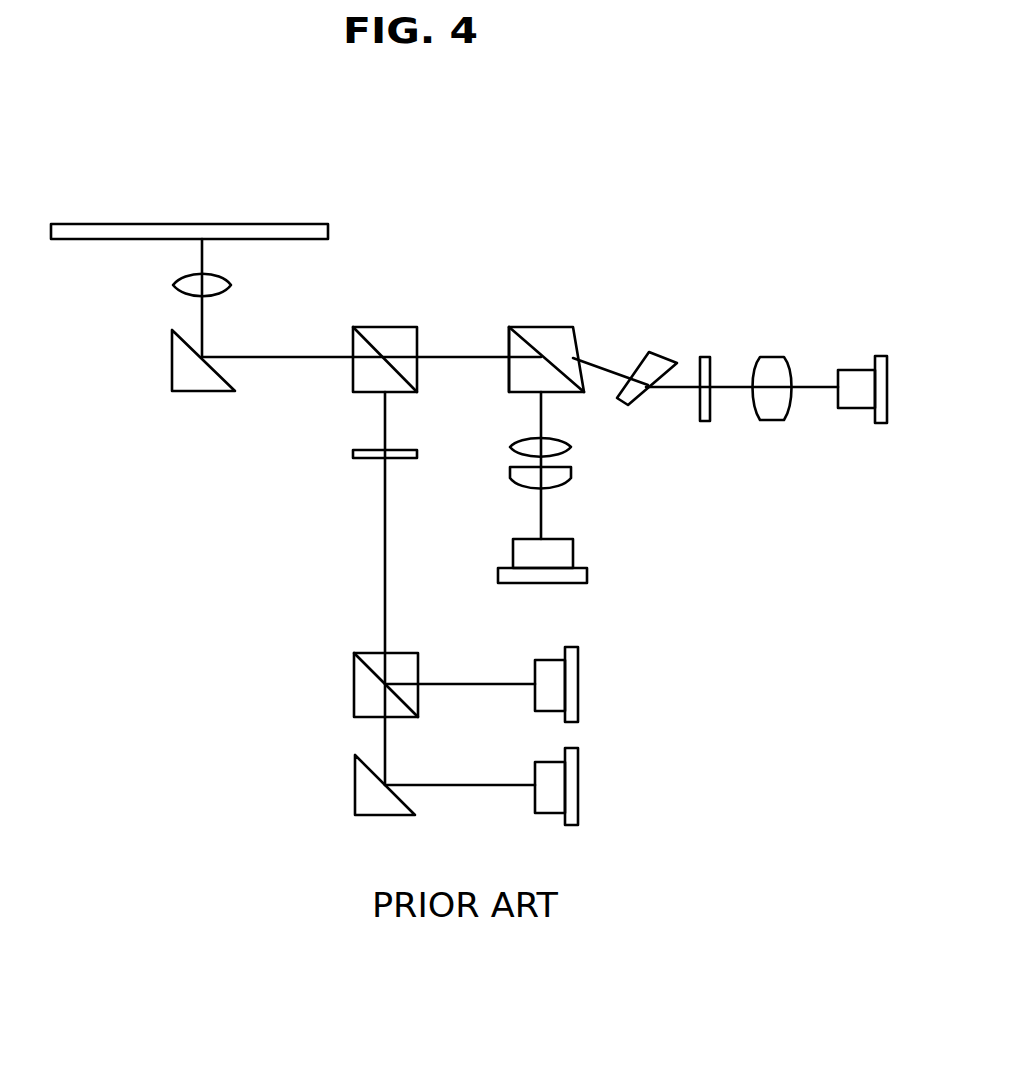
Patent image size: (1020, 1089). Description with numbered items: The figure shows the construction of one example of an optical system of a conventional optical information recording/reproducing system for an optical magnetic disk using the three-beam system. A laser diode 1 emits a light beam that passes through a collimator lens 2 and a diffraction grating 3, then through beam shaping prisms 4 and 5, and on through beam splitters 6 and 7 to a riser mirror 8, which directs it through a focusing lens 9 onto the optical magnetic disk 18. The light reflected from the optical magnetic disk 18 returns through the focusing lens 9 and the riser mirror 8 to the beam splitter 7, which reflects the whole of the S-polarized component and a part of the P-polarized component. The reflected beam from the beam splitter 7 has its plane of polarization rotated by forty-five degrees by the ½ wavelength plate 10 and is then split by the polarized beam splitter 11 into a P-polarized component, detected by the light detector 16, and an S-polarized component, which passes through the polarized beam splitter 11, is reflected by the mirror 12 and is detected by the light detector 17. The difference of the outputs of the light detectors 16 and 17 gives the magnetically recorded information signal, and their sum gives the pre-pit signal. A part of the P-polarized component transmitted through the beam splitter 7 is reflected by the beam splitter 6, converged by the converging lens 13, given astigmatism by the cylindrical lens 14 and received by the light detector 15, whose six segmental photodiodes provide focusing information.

The laser diode 1 is at (857, 370).
The collimator lens 2 is at (772, 357).
The diffraction grating 3 is at (707, 357).
The beam shaping prism 4 is at (672, 352).
The beam shaping prism 5 is at (556, 327).
The beam splitter 6 is at (509, 336).
The beam splitter 7 is at (400, 327).
The riser mirror 8 is at (172, 346).
The focusing lens 9 is at (173, 284).
The ½ wavelength plate 10 is at (357, 458).
The polarized beam splitter 11 is at (354, 668).
The mirror 12 is at (355, 772).
The converging lens 13 is at (571, 447).
The cylindrical lens 14 is at (571, 476).
The light detector 15 is at (587, 576).
The light detector 16 is at (578, 667).
The light detector 17 is at (578, 777).
The optical magnetic disk 18 is at (275, 224).